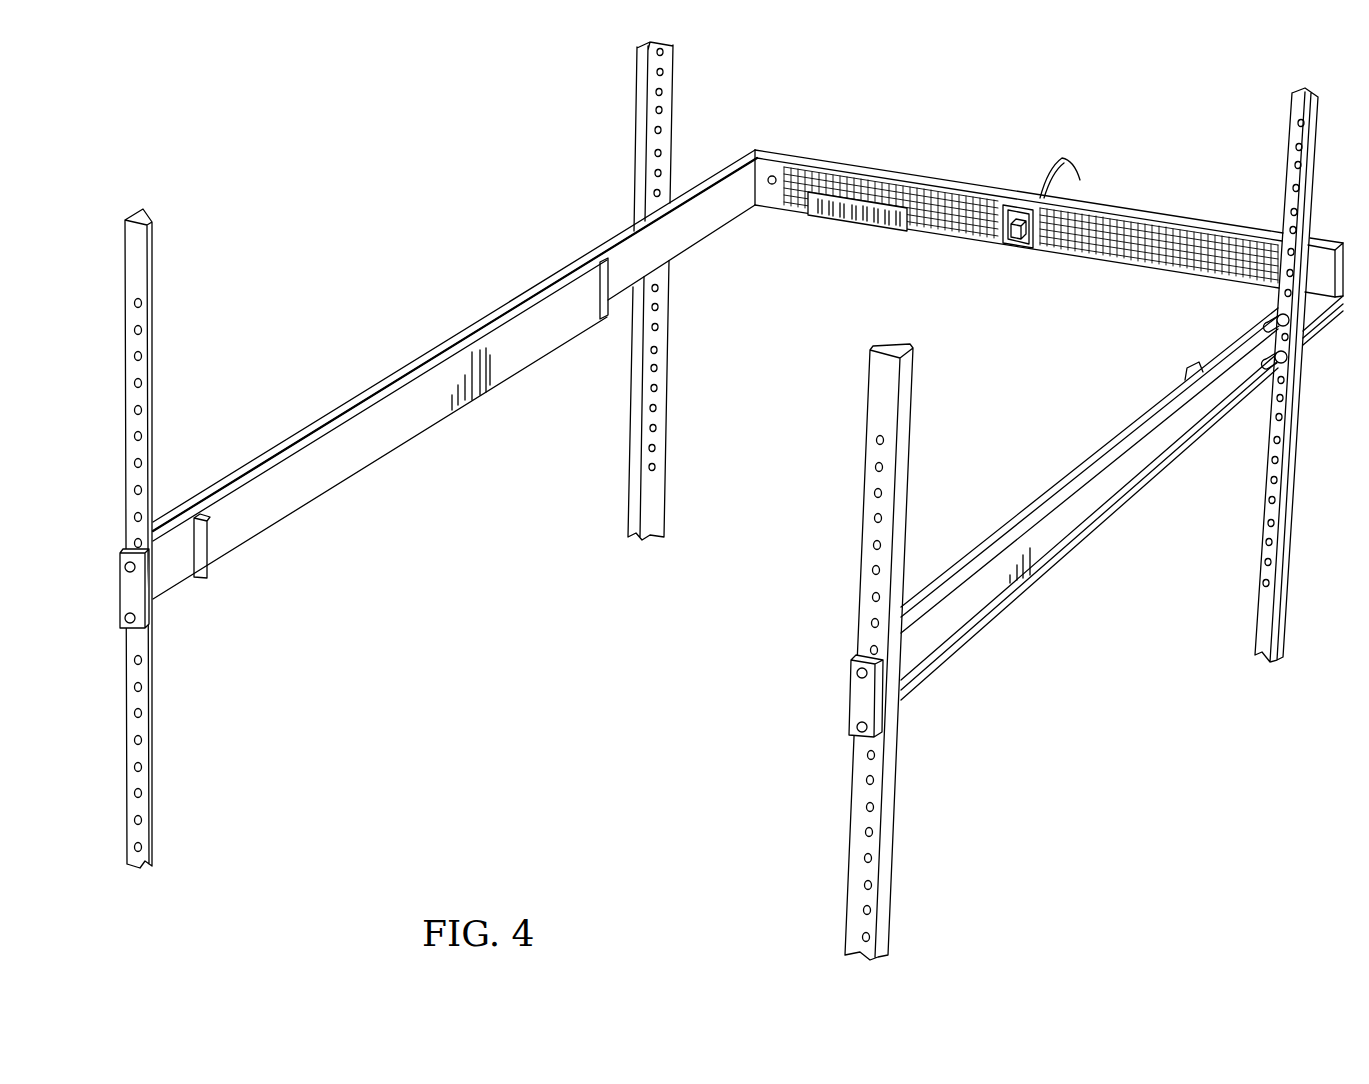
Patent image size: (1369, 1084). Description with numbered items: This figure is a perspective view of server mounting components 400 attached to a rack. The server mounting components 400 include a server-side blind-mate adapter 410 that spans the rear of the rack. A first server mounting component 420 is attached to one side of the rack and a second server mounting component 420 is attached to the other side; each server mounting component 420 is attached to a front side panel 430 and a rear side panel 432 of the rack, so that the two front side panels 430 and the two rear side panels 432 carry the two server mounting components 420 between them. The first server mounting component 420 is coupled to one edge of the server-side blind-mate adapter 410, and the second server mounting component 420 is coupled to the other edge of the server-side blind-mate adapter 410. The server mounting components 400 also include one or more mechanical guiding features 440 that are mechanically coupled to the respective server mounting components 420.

The server mounting components 400 is at (1036, 110).
The server-side blind-mate adapter 410 is at (1128, 212).
The server mounting component 420 is at (313, 433).
The front side panel 430 is at (127, 262).
The rear side panel 432 is at (637, 97).
The mechanical guiding feature 440 is at (313, 493).